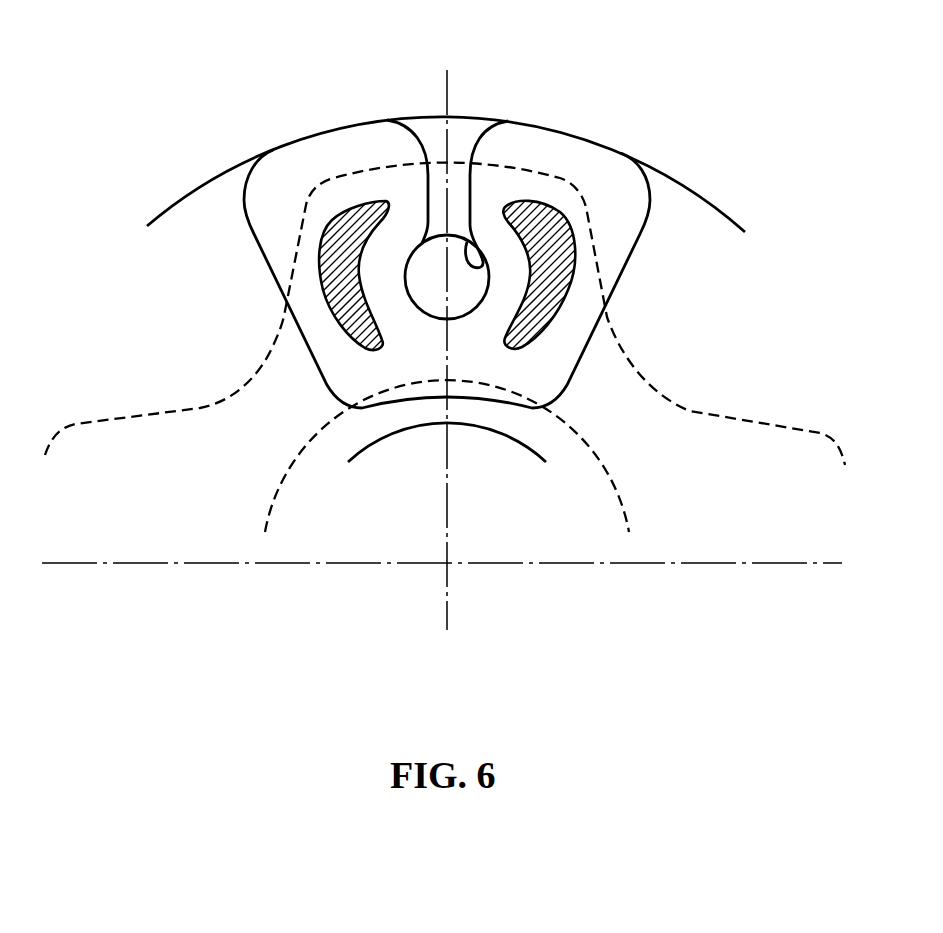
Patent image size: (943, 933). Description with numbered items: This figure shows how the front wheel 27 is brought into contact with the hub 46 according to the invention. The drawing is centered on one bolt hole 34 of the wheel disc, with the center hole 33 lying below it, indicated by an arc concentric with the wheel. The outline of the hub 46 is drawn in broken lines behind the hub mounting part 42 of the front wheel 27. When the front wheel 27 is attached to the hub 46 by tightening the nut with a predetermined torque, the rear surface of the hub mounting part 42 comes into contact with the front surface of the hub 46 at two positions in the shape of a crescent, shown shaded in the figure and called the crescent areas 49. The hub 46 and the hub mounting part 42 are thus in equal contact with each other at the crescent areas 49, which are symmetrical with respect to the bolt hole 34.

The front wheel 27 is at (203, 180).
The hub mounting part 42 is at (322, 158).
The bolt hole 34 is at (462, 167).
The crescent areas 49 is at (373, 203).
The hub 46 is at (170, 412).
The center hole 33 is at (517, 445).